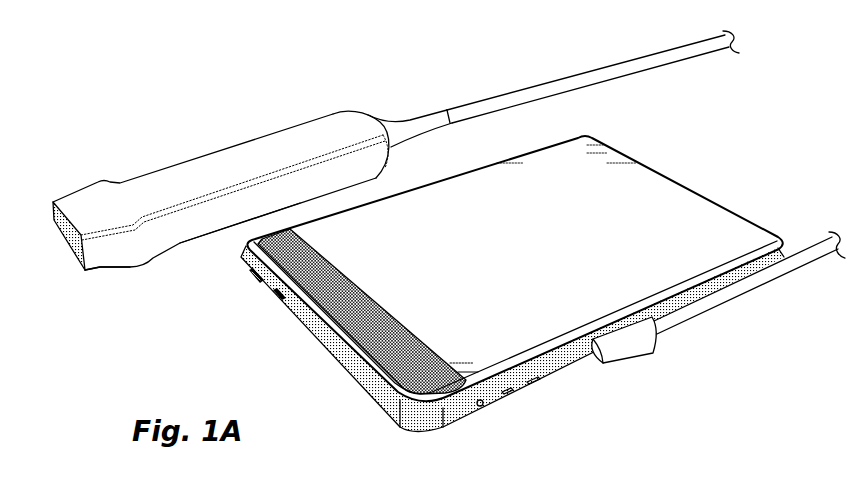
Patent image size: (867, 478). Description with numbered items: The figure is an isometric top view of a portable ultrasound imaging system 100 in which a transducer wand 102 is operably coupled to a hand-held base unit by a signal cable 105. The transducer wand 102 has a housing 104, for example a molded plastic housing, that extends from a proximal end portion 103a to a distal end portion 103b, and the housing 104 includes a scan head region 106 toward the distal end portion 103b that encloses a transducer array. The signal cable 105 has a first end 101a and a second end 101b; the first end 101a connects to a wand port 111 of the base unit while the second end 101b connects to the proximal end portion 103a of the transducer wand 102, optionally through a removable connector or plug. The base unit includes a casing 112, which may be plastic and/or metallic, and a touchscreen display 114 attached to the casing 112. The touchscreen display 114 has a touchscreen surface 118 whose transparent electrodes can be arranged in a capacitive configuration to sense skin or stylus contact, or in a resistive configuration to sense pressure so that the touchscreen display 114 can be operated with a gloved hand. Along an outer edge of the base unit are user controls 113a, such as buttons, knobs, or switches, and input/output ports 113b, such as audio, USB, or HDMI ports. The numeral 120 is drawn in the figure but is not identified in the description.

The portable ultrasound imaging system 100 is at (156, 62).
The transducer wand 102 is at (280, 134).
The proximal end portion 103a is at (371, 118).
The distal end portion 103b is at (78, 267).
The housing 104 is at (178, 243).
The scan head region 106 is at (97, 265).
The second end 101b is at (402, 128).
The signal cable 105 is at (551, 93).
The display device 120 is at (602, 136).
The touchscreen surface 118 is at (712, 240).
The touchscreen display 114 is at (716, 262).
The casing 112 is at (387, 398).
The first end 101a is at (630, 353).
The wand port 111 is at (590, 352).
The user controls 113a is at (276, 298).
The input/output ports 113b is at (507, 395).